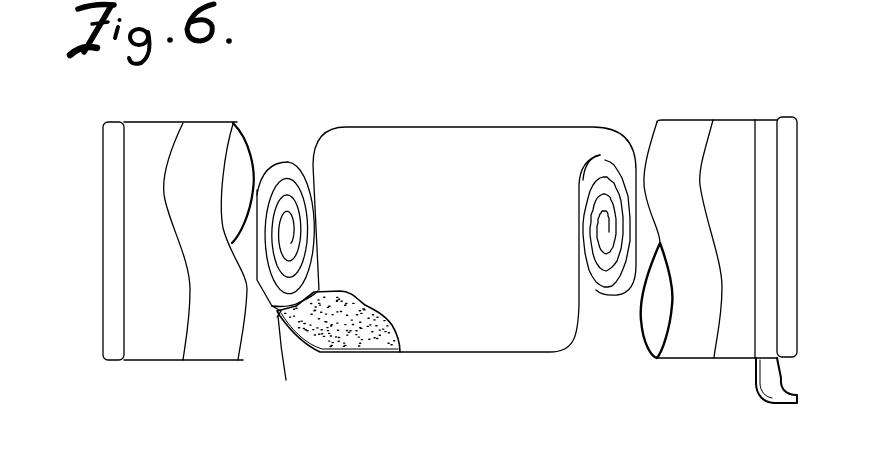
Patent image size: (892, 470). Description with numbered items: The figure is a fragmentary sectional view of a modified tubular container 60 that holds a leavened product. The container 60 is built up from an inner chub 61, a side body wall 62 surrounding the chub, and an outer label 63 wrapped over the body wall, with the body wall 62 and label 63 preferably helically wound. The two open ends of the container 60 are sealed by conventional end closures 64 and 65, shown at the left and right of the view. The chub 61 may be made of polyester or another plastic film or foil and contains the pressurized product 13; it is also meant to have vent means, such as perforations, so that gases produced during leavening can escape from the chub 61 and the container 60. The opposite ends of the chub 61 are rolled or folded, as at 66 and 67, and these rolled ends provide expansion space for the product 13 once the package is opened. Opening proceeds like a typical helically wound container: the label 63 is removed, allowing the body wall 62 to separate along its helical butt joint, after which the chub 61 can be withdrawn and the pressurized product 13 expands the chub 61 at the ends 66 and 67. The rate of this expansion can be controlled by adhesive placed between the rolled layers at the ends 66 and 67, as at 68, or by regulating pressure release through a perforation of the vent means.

The product 13 is at (346, 350).
The tubular container 60 is at (431, 119).
The inner chub 61 is at (528, 127).
The side body wall 62 is at (234, 122).
The label 63 is at (171, 122).
The end closure 64 is at (103, 222).
The end closure 65 is at (797, 228).
The rolled end 66 is at (613, 296).
The rolled end 67 is at (290, 162).
The adhesive 68 is at (275, 314).